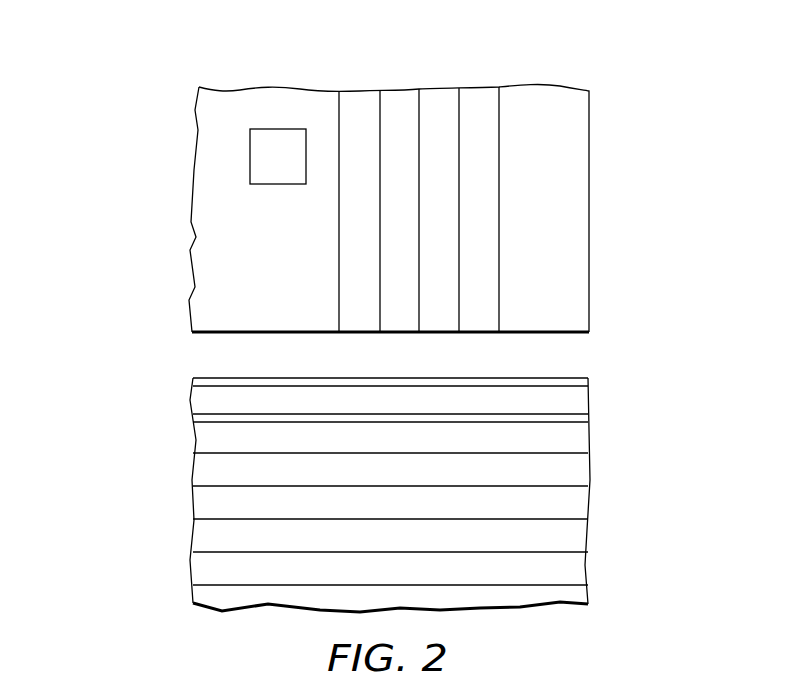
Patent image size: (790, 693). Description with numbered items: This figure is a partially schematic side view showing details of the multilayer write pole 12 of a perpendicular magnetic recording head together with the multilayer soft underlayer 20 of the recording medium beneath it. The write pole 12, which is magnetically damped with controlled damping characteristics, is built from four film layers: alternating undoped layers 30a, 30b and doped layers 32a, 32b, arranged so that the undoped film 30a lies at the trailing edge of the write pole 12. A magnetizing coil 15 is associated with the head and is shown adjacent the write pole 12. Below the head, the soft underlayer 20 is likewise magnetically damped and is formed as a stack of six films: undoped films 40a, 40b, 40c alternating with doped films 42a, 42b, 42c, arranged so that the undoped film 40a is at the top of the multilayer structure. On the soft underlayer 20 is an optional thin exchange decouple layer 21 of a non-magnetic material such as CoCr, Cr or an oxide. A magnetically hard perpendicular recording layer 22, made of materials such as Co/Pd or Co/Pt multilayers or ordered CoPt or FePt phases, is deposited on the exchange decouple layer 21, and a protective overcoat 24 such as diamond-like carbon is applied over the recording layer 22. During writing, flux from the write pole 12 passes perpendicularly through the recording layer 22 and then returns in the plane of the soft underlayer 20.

The write pole 12 is at (499, 81).
The magnetizing coil 15 is at (260, 155).
The doped layer 32b is at (360, 166).
The doped layer 32a is at (437, 196).
The undoped layer 30b is at (403, 258).
The undoped layer 30a is at (481, 294).
The protective overcoat 24 is at (588, 384).
The perpendicular recording layer 22 is at (578, 401).
The exchange decouple layer 21 is at (588, 420).
The soft underlayer 20 is at (595, 422).
The undoped layer 40a is at (208, 440).
The doped layer 42a is at (204, 470).
The undoped layer 40b is at (206, 504).
The doped layer 42b is at (200, 536).
The undoped layer 40c is at (202, 570).
The doped layer 42c is at (200, 597).